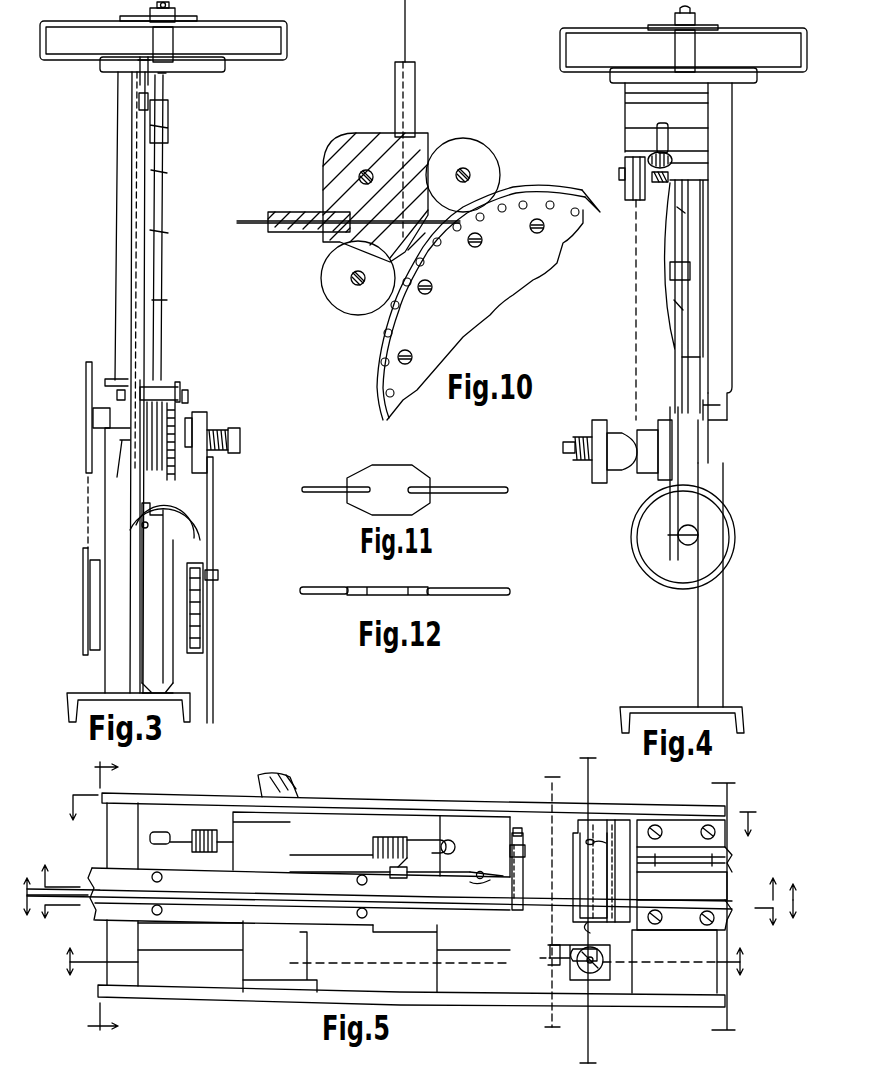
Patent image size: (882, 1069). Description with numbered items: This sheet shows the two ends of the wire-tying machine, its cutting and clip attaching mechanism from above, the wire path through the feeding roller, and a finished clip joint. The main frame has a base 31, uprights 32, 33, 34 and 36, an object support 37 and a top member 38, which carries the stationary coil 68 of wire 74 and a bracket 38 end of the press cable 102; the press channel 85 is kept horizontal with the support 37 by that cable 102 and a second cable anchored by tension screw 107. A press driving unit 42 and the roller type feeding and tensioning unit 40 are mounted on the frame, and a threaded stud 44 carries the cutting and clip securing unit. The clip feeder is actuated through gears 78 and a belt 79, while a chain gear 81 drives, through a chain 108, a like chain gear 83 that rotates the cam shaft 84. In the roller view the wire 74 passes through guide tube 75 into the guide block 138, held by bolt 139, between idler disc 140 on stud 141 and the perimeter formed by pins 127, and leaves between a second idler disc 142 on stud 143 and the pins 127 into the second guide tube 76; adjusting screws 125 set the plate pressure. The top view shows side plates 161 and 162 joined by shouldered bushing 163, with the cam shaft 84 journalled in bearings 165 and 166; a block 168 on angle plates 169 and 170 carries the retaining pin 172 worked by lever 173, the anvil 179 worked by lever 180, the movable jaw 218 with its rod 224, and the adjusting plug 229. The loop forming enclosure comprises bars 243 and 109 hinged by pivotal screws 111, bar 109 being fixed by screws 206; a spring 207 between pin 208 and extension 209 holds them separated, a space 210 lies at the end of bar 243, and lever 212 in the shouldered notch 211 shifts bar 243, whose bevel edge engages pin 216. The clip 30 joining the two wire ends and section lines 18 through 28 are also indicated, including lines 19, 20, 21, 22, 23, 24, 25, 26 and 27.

In FIG. 5, the section line 18 is at (409, 918).
In FIG. 5, the section line 19 is at (409, 879).
In FIG. 5, the section line 20 is at (411, 928).
In FIG. 5, the section line 21 is at (407, 946).
In FIG. 5, the section line 22 is at (409, 979).
In FIG. 5, the section line 23 is at (411, 877).
In FIG. 5, the section line 24 is at (414, 825).
In FIG. 5, the section line 25 is at (708, 783).
In FIG. 5, the section line 26 is at (114, 897).
In FIG. 5, the section line 27 is at (537, 777).
In FIG. 5, the section line 28 is at (571, 758).
In FIG. 11, the cutting rod 30 is at (410, 478).
In FIG. 12, the cutting rod 30 is at (365, 587).
In FIG. 5, the cutting rod 30 is at (683, 862).
In FIG. 3, the base 31 is at (67, 712).
In FIG. 4, the base 31 is at (636, 712).
In FIG. 3, the upright 32 is at (104, 668).
In FIG. 4, the upright 33 is at (700, 647).
In FIG. 3, the upright 34 is at (127, 115).
In FIG. 4, the upright 36 is at (722, 252).
In FIG. 3, the object support 37 is at (117, 471).
In FIG. 4, the object support 37 is at (720, 410).
In FIG. 3, the top member 38 is at (205, 72).
In FIG. 4, the top member 38 is at (748, 85).
In FIG. 3, the roller type wire feeding and tensioning unit 40 is at (210, 590).
In FIG. 10, the roller type wire feeding and tensioning unit 40 is at (507, 278).
In FIG. 4, the roller type wire feeding and tensioning unit 40 is at (700, 463).
In FIG. 3, the press driving unit 42 is at (200, 412).
In FIG. 3, the threaded stud 44 is at (182, 396).
In FIG. 3, the stationary coil of wire 68 is at (278, 43).
In FIG. 4, the stationary coil of wire 68 is at (568, 48).
In FIG. 10, the wire strand 74 is at (250, 220).
In FIG. 11, the wire strand 74 is at (322, 485).
In FIG. 12, the wire strand 74 is at (328, 600).
In FIG. 10, the guide tube 75 is at (416, 95).
In FIG. 10, the second guide tube 76 is at (289, 233).
In FIG. 4, the pair of gears 78 is at (672, 155).
In FIG. 4, the belt 79 is at (633, 372).
In FIG. 3, the chain gear 81 is at (82, 582).
In FIG. 3, the chain gear 83 is at (86, 375).
In FIG. 5, the cam shaft 84 is at (292, 777).
In FIG. 3, the press channel 85 is at (143, 105).
In FIG. 3, the cable 102 is at (133, 170).
In FIG. 3, the tension screw 107 is at (143, 62).
In FIG. 3, the chain 108 is at (86, 488).
In FIG. 5, the chain 108 is at (727, 888).
In FIG. 5, the bar 109 is at (124, 910).
In FIG. 5, the pivotal screws 111 is at (163, 877).
In FIG. 10, the adjusting screws 125 is at (478, 247).
In FIG. 10, the pins 127 is at (432, 250).
In FIG. 10, the guide block 138 is at (373, 133).
In FIG. 10, the bolt 139 is at (362, 172).
In FIG. 10, the idler disc 140 is at (335, 292).
In FIG. 10, the stud 141 is at (355, 285).
In FIG. 10, the second idler disc 142 is at (468, 140).
In FIG. 10, the stud 143 is at (470, 173).
In FIG. 5, the side plate 161 is at (422, 800).
In FIG. 5, the side plate 162 is at (445, 1003).
In FIG. 5, the shouldered bushing 163 is at (135, 972).
In FIG. 5, the bearing 165 is at (308, 806).
In FIG. 5, the bearing 166 is at (248, 993).
In FIG. 5, the block 168 is at (633, 940).
In FIG. 5, the angle plate 169 is at (480, 815).
In FIG. 5, the angle plate 170 is at (670, 993).
In FIG. 5, the retaining pin 172 is at (512, 837).
In FIG. 5, the lever 173 is at (523, 840).
In FIG. 5, the anvil 179 is at (586, 928).
In FIG. 5, the lever 180 is at (615, 820).
In FIG. 5, the screws 206 is at (492, 925).
In FIG. 5, the spring 207 is at (390, 837).
In FIG. 5, the pin 208 is at (452, 842).
In FIG. 5, the extension 209 is at (160, 832).
In FIG. 5, the space 210 is at (645, 897).
In FIG. 5, the shouldered notch 211 is at (407, 878).
In FIG. 5, the lever 212 is at (415, 840).
In FIG. 5, the pin 216 is at (490, 866).
In FIG. 5, the movable jaw 218 is at (545, 975).
In FIG. 5, the second rod 224 is at (520, 958).
In FIG. 5, the threaded adjusting plug 229 is at (590, 970).
In FIG. 5, the bar 243 is at (124, 870).